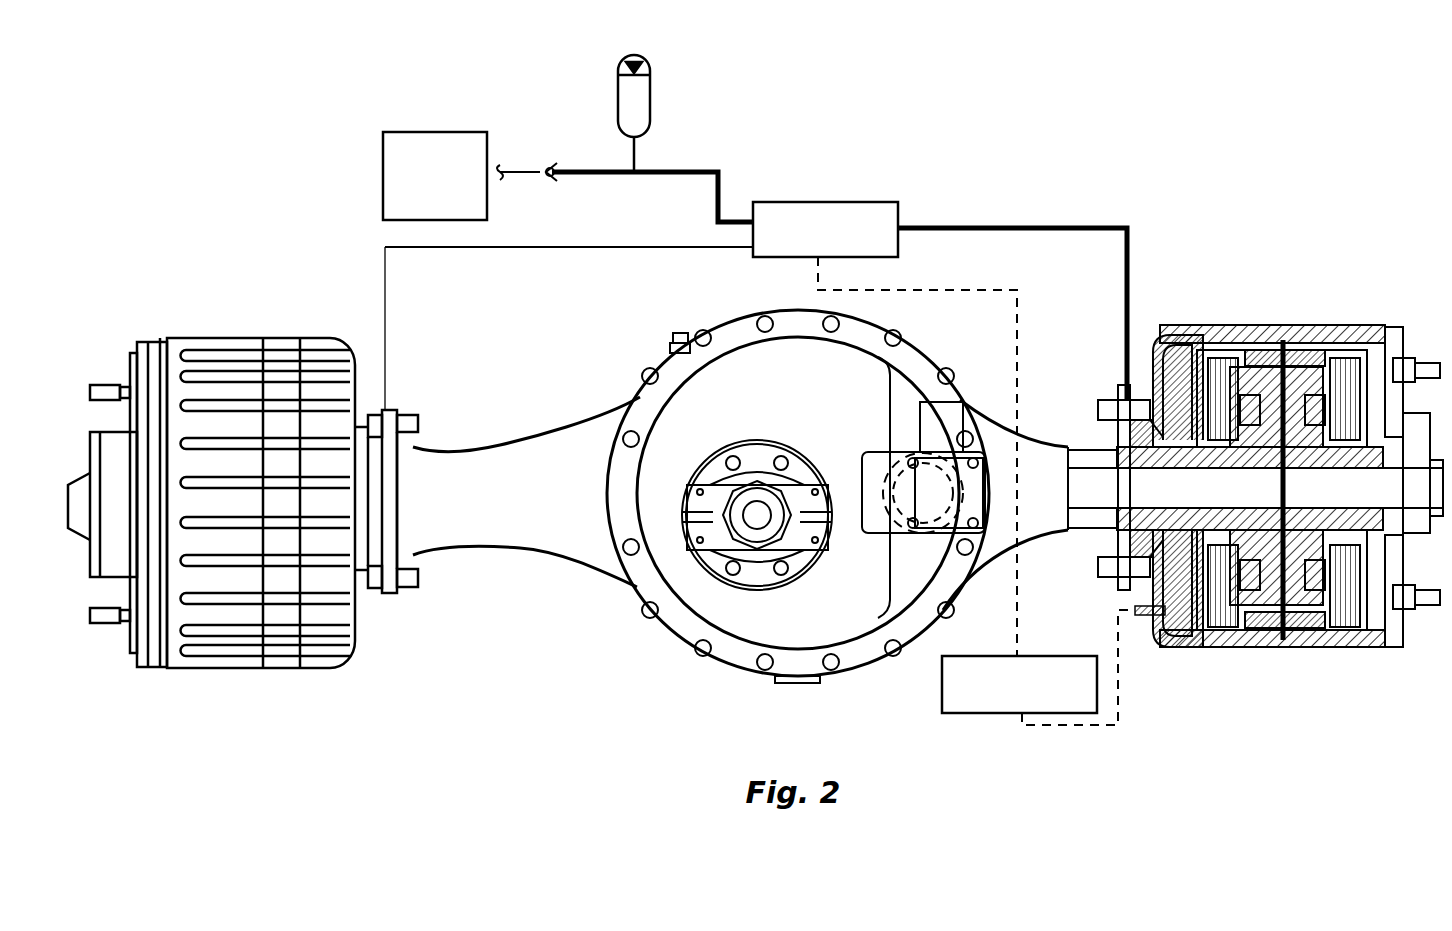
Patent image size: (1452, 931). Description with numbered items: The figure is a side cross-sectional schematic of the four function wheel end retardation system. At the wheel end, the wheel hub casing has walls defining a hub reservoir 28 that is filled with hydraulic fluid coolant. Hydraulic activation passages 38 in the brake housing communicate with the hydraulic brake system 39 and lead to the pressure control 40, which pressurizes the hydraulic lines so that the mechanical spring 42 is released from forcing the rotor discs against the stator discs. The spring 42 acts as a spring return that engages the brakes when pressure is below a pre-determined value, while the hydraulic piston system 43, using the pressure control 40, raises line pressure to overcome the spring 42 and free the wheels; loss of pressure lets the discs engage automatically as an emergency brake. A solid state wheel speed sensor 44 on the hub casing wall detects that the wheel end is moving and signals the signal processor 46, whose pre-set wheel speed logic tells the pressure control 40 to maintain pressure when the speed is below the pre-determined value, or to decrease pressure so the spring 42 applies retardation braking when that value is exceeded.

The hub reservoir 28 is at (1190, 350).
The hydraulic activation passages 38 is at (1110, 400).
The hydraulic brake system 39 is at (455, 132).
The pressure control 40 is at (867, 202).
The mechanical spring 42 is at (1277, 330).
The hydraulic piston system 43 is at (1247, 328).
The solid state wheel speed sensor 44 is at (1145, 615).
The signal processor 46 is at (988, 713).